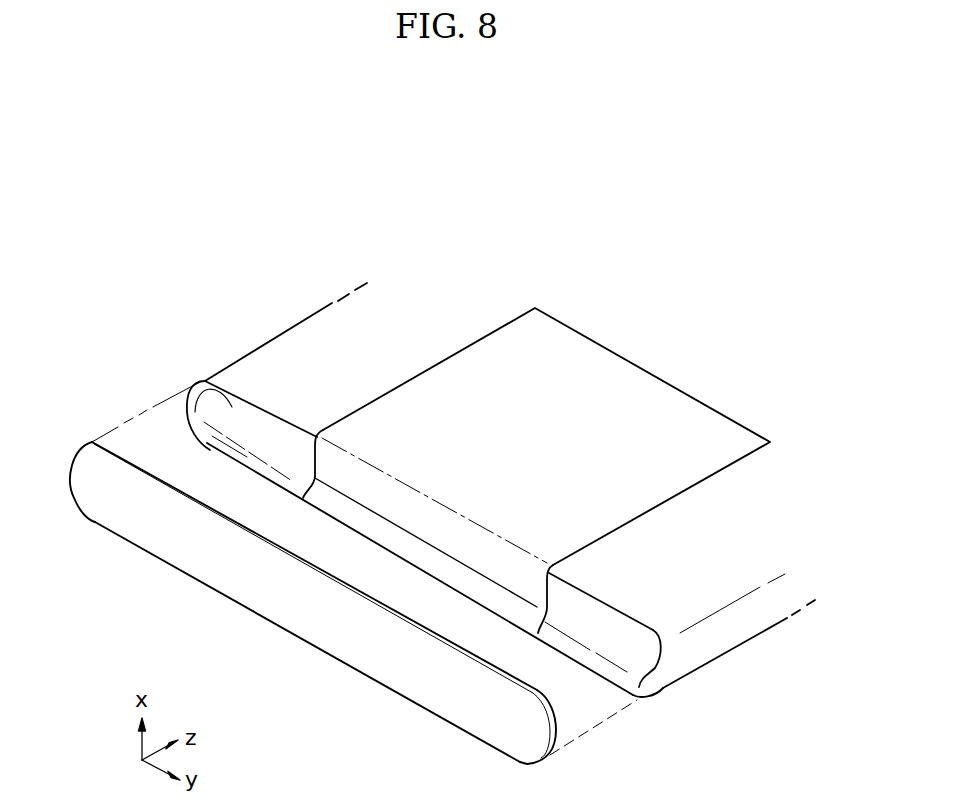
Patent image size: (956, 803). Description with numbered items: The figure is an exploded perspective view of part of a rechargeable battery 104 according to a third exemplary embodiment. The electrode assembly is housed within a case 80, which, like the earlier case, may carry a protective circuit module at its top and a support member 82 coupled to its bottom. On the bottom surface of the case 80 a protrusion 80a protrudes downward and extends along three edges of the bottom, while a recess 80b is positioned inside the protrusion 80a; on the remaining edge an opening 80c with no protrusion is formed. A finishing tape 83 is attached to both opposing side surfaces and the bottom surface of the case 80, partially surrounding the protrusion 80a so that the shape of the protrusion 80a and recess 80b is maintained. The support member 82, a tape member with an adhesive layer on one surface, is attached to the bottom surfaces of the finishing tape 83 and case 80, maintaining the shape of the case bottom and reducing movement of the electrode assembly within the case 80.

The rechargeable battery 104 is at (464, 227).
The case 80 is at (332, 303).
The protrusion 80a is at (607, 673).
The recess 80b is at (205, 381).
The opening 80c is at (263, 400).
The support member 82 is at (232, 585).
The finishing tape 83 is at (645, 498).